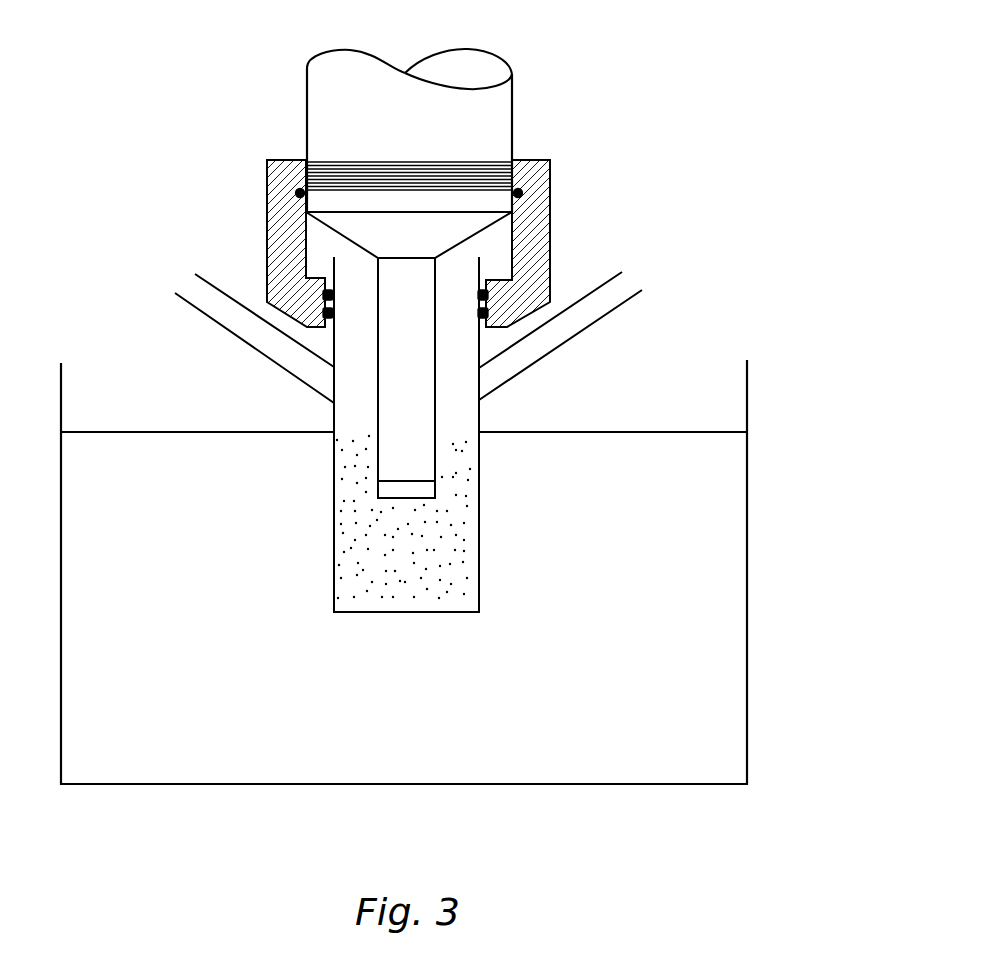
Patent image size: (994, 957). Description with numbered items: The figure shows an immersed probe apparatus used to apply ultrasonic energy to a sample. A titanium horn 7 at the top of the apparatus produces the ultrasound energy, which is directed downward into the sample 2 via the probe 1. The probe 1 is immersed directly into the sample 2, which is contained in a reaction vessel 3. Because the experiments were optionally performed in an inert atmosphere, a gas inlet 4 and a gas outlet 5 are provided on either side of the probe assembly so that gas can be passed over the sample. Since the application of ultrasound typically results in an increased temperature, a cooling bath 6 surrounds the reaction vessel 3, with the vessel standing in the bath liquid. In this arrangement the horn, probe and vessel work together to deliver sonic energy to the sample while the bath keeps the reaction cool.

The probe 1 is at (427, 442).
The sample 2 is at (467, 570).
The reaction vessel 3 is at (477, 477).
The gas inlet 4 is at (186, 285).
The gas outlet 5 is at (645, 271).
The cooling bath 6 is at (747, 568).
The titanium horn 7 is at (512, 92).